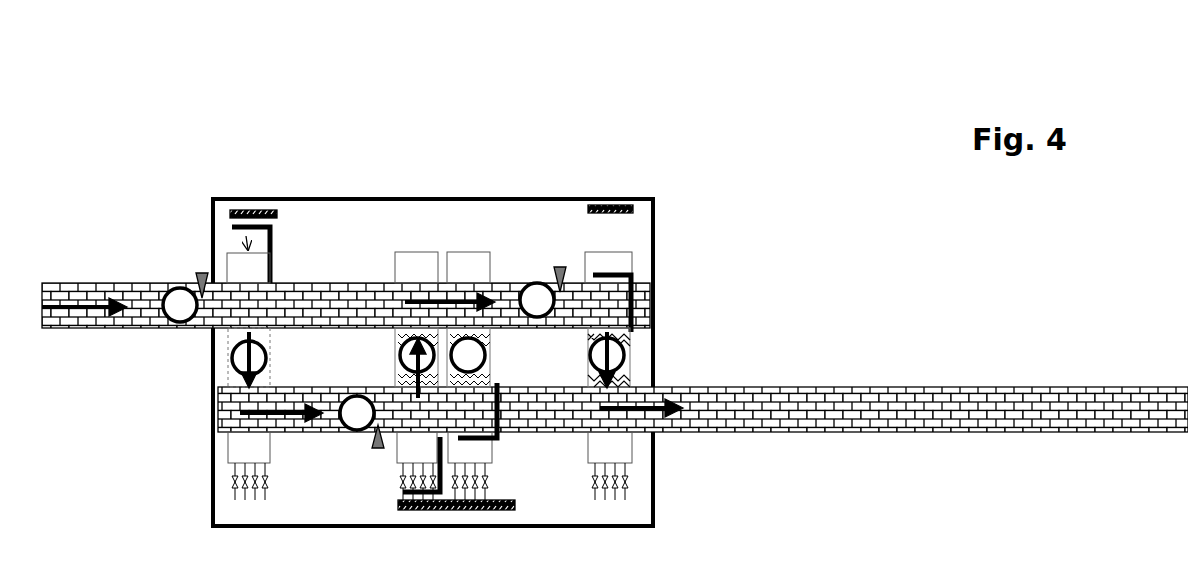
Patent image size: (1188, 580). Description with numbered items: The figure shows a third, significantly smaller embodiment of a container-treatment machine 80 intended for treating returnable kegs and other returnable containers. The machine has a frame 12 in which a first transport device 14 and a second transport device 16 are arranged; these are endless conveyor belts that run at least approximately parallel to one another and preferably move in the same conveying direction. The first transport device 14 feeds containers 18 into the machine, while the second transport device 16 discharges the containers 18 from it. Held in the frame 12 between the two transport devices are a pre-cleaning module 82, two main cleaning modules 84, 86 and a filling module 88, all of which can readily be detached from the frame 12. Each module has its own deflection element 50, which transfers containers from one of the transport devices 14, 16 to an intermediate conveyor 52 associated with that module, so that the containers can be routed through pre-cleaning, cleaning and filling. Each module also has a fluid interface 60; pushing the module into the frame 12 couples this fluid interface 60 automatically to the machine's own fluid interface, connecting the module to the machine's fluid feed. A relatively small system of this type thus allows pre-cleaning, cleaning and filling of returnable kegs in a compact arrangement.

The frame 12 is at (337, 199).
The first transport device 14 is at (141, 293).
The second transport device 16 is at (740, 434).
The container 18 is at (178, 308).
The deflection element 50 is at (532, 420).
The intermediate conveyor 52 is at (240, 448).
The fluid interface 60 is at (245, 493).
The container-treatment machine 80 is at (645, 121).
The pre-cleaning module 82 is at (262, 210).
The main cleaning module 84 is at (419, 256).
The main cleaning module 86 is at (474, 261).
The filling module 88 is at (620, 262).